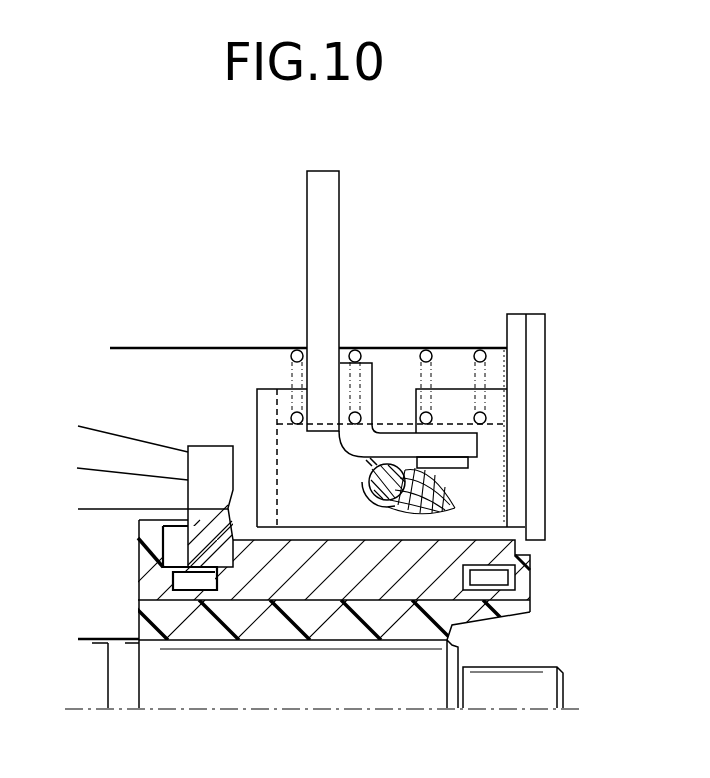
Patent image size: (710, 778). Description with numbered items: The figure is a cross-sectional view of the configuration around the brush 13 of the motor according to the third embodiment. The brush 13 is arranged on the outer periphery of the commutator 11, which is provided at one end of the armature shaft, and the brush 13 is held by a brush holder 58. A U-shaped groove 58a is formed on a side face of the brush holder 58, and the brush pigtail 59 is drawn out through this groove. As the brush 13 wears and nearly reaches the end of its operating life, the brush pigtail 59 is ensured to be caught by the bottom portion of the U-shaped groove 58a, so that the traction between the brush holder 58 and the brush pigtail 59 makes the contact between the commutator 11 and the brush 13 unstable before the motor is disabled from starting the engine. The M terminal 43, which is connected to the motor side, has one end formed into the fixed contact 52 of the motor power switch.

The fixed contact 52 is at (313, 203).
The M terminal 43 is at (320, 342).
The brush holder 58 is at (488, 498).
The U-shaped groove 58a is at (380, 457).
The brush pigtail 59 is at (438, 490).
The brush 13 is at (327, 535).
The commutator 11 is at (397, 575).